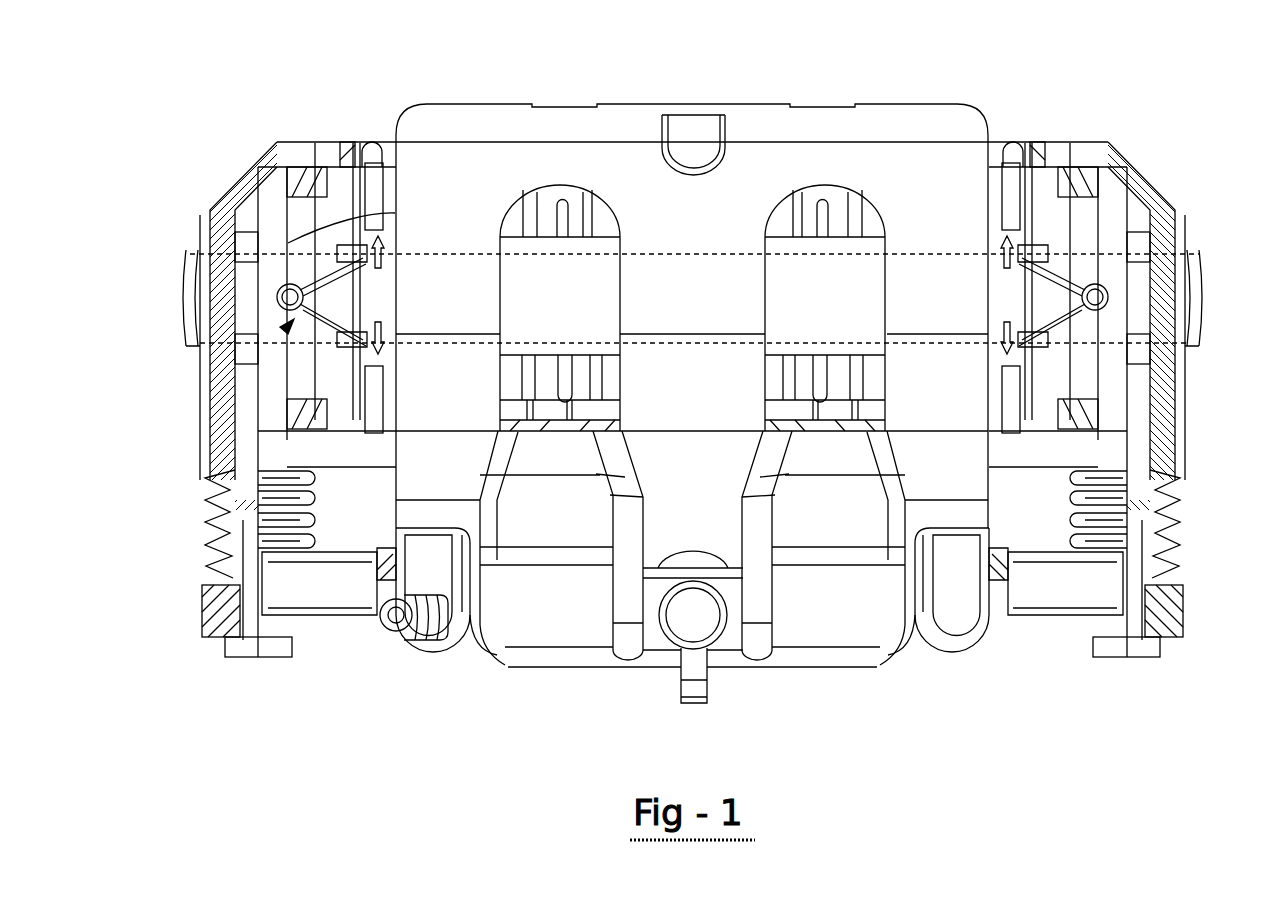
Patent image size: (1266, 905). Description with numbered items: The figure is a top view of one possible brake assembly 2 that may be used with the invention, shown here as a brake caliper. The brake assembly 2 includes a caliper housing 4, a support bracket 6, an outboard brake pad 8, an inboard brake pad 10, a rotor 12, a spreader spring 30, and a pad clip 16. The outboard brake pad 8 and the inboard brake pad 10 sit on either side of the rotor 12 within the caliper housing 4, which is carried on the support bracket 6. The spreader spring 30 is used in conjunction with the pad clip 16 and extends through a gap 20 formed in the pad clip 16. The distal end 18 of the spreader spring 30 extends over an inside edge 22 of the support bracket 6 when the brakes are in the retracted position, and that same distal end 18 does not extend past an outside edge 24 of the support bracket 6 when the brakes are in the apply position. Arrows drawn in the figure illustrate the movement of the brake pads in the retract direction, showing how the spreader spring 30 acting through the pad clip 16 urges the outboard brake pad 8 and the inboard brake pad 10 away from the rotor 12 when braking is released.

The brake assembly 2 is at (240, 68).
The caliper housing 4 is at (445, 462).
The support bracket 6 is at (270, 383).
The outboard brake pad 8 is at (548, 222).
The inboard brake pad 10 is at (512, 382).
The rotor 12 is at (598, 295).
The pad clip 16 is at (1085, 222).
The distal end 18 is at (277, 295).
The gap 20 is at (285, 326).
The inside edge 22 is at (395, 214).
The outside edge 24 is at (237, 272).
The spreader spring 30 is at (333, 290).